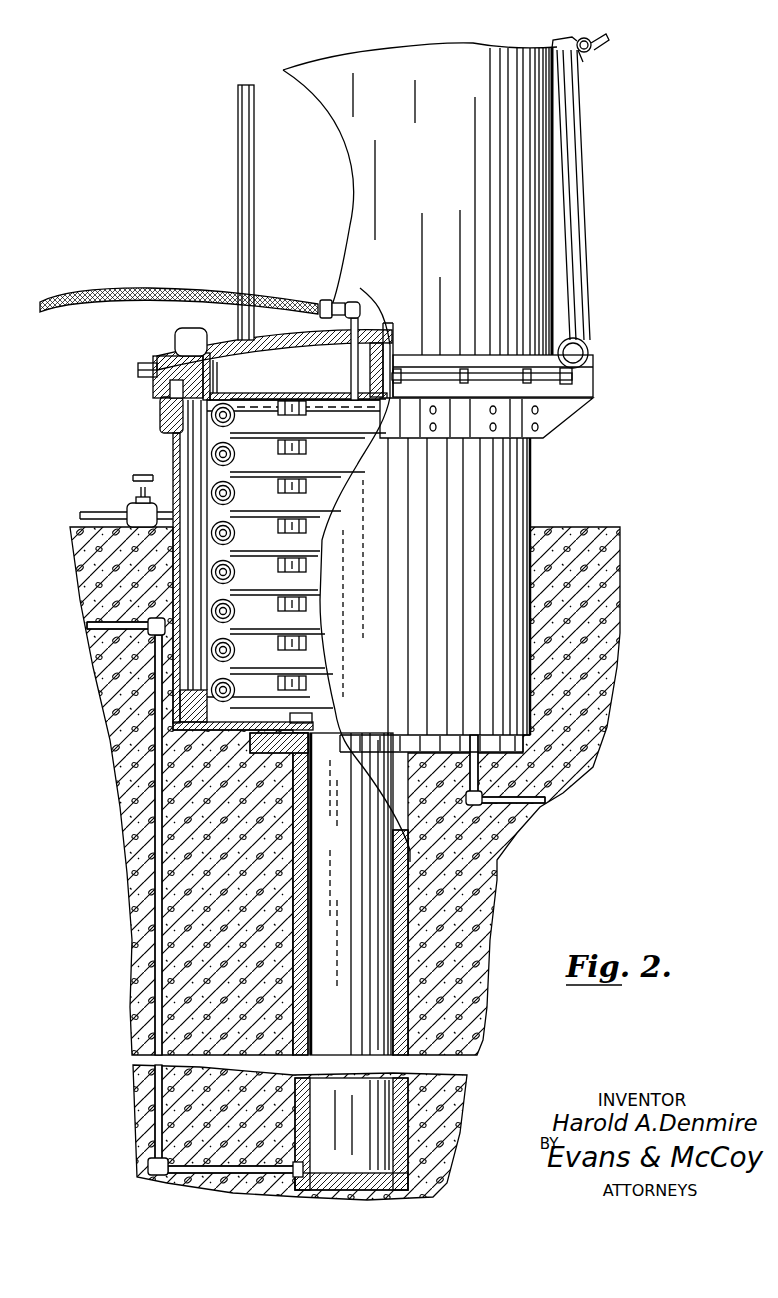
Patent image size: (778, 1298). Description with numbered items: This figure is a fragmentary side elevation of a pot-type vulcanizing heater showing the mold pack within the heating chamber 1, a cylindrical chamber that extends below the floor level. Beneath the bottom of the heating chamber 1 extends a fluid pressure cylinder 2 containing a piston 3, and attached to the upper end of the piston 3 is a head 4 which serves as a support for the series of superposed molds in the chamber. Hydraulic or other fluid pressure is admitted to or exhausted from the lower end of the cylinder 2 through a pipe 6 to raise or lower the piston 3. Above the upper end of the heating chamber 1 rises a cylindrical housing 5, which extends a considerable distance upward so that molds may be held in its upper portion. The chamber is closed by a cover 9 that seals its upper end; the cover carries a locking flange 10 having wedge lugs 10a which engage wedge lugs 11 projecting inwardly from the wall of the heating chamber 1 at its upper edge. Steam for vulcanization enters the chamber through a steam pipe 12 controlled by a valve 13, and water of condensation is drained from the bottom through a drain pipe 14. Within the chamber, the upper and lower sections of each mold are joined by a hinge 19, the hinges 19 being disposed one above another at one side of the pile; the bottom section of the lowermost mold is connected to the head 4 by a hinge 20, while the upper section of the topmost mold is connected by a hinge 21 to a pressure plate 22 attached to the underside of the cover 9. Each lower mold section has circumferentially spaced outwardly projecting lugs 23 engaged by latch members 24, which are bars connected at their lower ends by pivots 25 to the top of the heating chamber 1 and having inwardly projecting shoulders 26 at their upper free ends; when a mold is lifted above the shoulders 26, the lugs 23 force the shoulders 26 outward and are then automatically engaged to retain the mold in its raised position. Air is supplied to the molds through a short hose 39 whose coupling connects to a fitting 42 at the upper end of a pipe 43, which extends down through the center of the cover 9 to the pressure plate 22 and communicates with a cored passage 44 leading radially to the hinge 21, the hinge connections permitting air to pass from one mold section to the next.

The heating chamber 1 is at (530, 492).
The fluid pressure cylinder 2 is at (407, 1003).
The piston 3 is at (380, 1113).
The head 4 is at (310, 704).
The cylindrical housing 5 is at (537, 260).
The pipe 6 is at (157, 978).
The cover 9 is at (277, 335).
The locking flange 10 is at (160, 413).
The wedge lugs 10a is at (155, 396).
The wedge lugs 11 is at (212, 376).
The steam pipe 12 is at (103, 510).
The valve 13 is at (138, 478).
The drain pipe 14 is at (527, 807).
The hinge 19 is at (232, 499).
The hinge 20 is at (236, 698).
The hinge 21 is at (242, 402).
The pressure plate 22 is at (372, 432).
The lugs 23 is at (308, 524).
The latch members 24 is at (255, 218).
The pivots 25 is at (222, 340).
The shoulders 26 is at (547, 38).
The hose 39 is at (133, 287).
The fitting 42 is at (360, 300).
The pipe 43 is at (385, 327).
The cored passage 44 is at (313, 397).